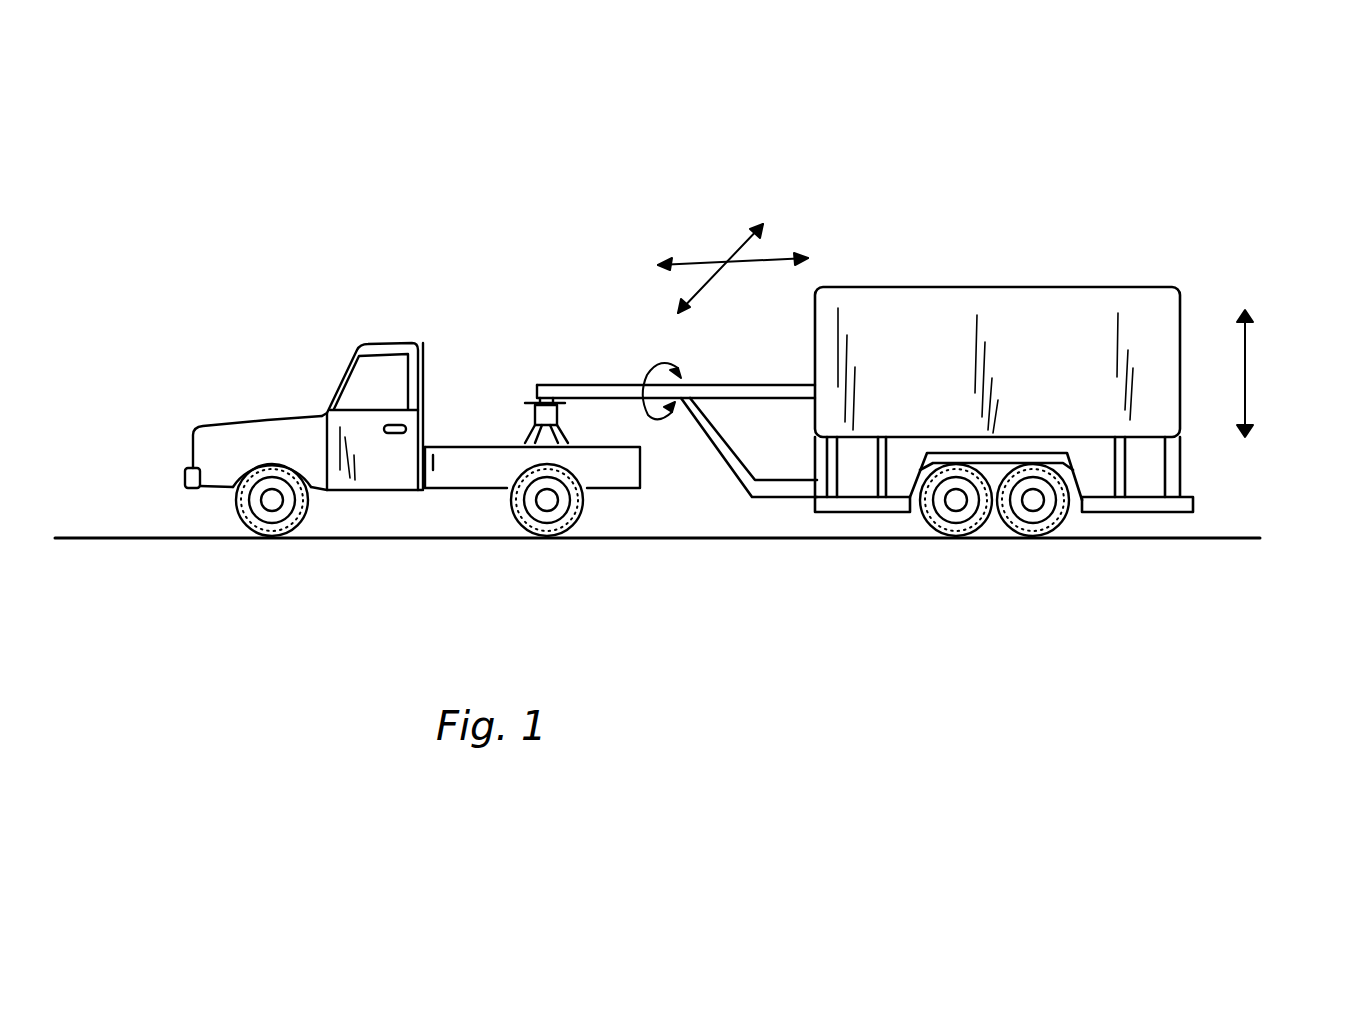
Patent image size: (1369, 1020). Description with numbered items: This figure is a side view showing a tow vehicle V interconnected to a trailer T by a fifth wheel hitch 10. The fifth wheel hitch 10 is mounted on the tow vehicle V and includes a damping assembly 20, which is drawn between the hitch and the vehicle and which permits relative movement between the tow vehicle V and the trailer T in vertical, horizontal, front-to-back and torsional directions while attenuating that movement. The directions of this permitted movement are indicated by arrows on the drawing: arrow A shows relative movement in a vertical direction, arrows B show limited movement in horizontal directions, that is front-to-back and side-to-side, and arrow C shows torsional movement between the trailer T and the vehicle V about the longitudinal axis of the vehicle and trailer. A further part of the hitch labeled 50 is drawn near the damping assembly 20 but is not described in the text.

The fifth wheel hitch 10 is at (510, 398).
The hitch coupler 50 is at (527, 394).
The damping assembly 20 is at (560, 405).
The tow vehicle V is at (348, 357).
The trailer T is at (1021, 287).
The arrow C is at (660, 362).
The arrows B is at (725, 260).
The arrow A is at (1247, 377).